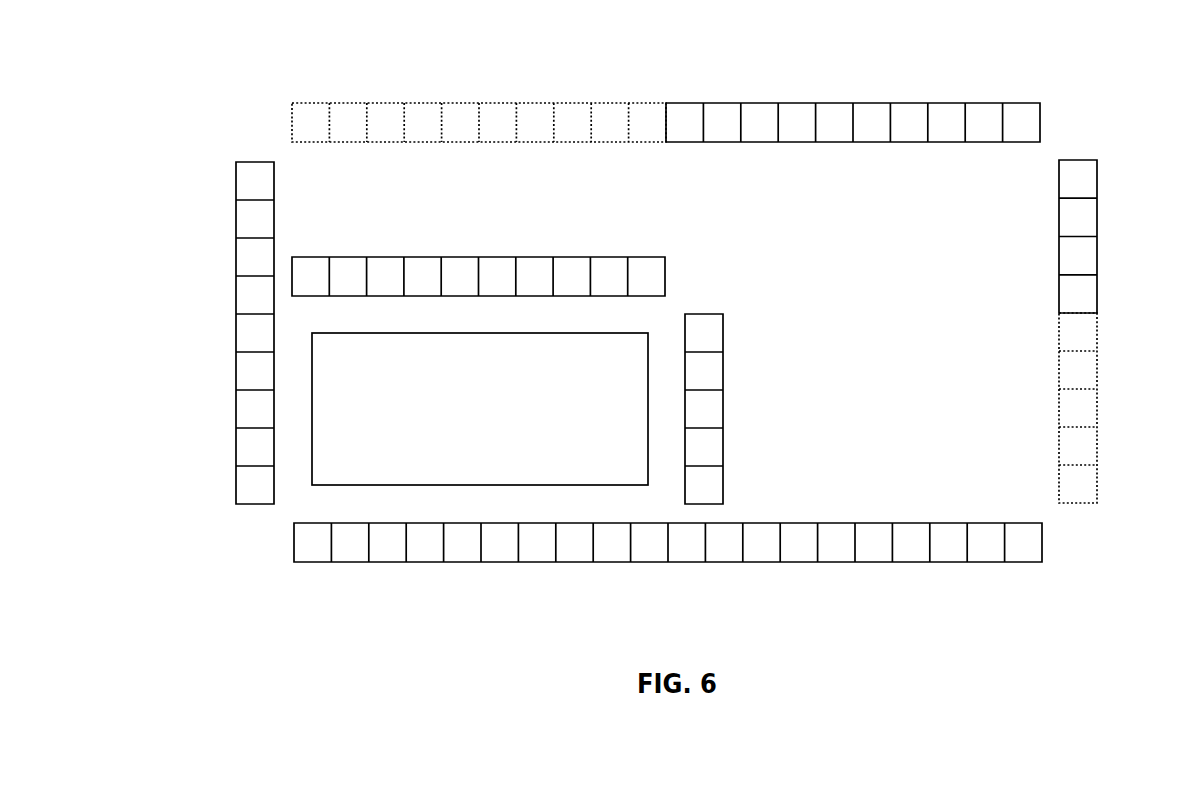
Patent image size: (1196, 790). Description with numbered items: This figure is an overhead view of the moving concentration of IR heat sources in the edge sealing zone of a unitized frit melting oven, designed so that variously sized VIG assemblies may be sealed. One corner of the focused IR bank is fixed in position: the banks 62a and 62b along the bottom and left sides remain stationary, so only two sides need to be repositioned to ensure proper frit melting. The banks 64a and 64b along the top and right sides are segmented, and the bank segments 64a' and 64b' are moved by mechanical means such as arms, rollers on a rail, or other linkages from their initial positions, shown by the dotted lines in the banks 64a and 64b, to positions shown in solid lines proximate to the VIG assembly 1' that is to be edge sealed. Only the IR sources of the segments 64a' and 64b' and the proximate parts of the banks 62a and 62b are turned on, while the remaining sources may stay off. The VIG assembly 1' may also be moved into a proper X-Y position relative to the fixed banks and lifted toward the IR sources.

The IR source bank 64a is at (666, 90).
The bank segment 64a' is at (478, 252).
The IR source bank 62b is at (206, 424).
The VIG assembly 1' is at (480, 409).
The bank segment 64b' is at (741, 409).
The IR source bank 64b is at (1115, 331).
The IR source bank 62a is at (442, 595).